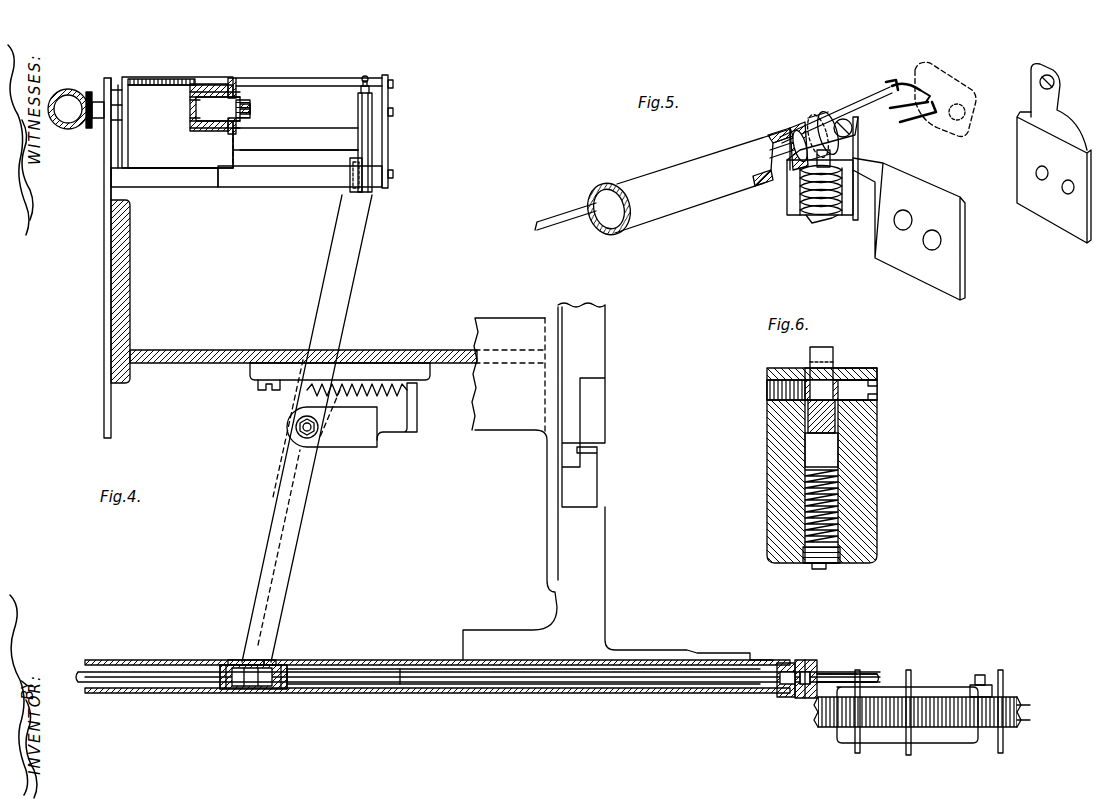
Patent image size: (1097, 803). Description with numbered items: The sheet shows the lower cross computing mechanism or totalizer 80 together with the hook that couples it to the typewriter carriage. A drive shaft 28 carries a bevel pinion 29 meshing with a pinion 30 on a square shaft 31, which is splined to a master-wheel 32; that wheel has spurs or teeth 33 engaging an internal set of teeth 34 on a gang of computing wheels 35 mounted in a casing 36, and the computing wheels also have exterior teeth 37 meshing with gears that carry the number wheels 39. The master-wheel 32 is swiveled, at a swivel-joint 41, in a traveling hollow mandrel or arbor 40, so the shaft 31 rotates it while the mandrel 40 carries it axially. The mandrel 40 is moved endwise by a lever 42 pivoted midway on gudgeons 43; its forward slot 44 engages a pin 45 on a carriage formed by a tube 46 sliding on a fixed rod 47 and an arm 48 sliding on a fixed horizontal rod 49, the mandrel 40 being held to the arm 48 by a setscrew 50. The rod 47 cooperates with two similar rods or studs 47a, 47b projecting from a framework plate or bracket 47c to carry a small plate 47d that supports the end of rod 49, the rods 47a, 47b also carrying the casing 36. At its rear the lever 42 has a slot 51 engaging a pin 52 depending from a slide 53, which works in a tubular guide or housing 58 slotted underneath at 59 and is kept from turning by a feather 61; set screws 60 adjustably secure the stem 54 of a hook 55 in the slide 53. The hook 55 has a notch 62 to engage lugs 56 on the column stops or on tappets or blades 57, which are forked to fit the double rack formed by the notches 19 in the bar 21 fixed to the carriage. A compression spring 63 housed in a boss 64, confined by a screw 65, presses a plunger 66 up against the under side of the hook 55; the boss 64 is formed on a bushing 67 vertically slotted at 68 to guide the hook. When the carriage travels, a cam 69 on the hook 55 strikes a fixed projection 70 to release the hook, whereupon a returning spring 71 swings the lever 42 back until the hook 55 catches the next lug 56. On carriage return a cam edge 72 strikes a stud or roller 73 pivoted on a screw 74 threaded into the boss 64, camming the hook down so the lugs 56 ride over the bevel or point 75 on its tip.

In FIG. 4, the notch 19 is at (990, 727).
In FIG. 4, the bar 21 is at (1018, 712).
In FIG. 4, the drive shaft 28 is at (68, 114).
In FIG. 4, the bevel pinion 29 is at (70, 89).
In FIG. 4, the pinion 30 is at (92, 128).
In FIG. 4, the square shaft 31 is at (97, 102).
In FIG. 4, the master-wheel 32 is at (190, 120).
In FIG. 4, the spurs or teeth 33 is at (224, 132).
In FIG. 4, the internal set of teeth 34 is at (190, 99).
In FIG. 4, the computing wheels 35 is at (215, 84).
In FIG. 4, the casing 36 is at (168, 187).
In FIG. 4, the exterior teeth 37 is at (232, 80).
In FIG. 4, the number wheels 39 is at (160, 80).
In FIG. 4, the traveling hollow mandrel or arbor 40 is at (293, 86).
In FIG. 4, the swivel-joint 41 is at (245, 100).
In FIG. 4, the lever 42 is at (307, 428).
In FIG. 4, the gudgeons 43 is at (305, 448).
In FIG. 4, the slot 44 is at (355, 192).
In FIG. 4, the pin 45 is at (352, 180).
In FIG. 4, the tube 46 is at (300, 177).
In FIG. 4, the fixed rod 47 is at (188, 183).
In FIG. 4, the rod or stud 47a is at (372, 128).
In FIG. 4, the rod or stud 47b is at (324, 86).
In FIG. 4, the framework plate or bracket 47c is at (104, 230).
In FIG. 4, the small plate 47d is at (388, 100).
In FIG. 4, the arm 48 is at (372, 150).
In FIG. 4, the fixed horizontal rod 49 is at (322, 150).
In FIG. 4, the setscrew 50 is at (365, 78).
In FIG. 4, the slot 51 is at (244, 662).
In FIG. 4, the pin 52 is at (268, 663).
In FIG. 4, the slide 53 is at (305, 690).
In FIG. 4, the stem 54 is at (672, 682).
In FIG. 5, the stem 54 is at (560, 230).
In FIG. 6, the stem 54 is at (805, 422).
In FIG. 4, the hook 55 is at (866, 674).
In FIG. 5, the hook 55 is at (899, 80).
In FIG. 6, the hook 55 is at (833, 352).
In FIG. 5, the lugs 56 is at (884, 84).
In FIG. 4, the tappets or blades 57 is at (1003, 673).
In FIG. 5, the tappets or blades 57 is at (950, 72).
In FIG. 4, the tubular guide or housing 58 is at (566, 694).
In FIG. 5, the tubular guide or housing 58 is at (684, 185).
In FIG. 4, the slot 59 is at (370, 690).
In FIG. 4, the set screws 60 is at (222, 690).
In FIG. 4, the feather 61 is at (240, 690).
In FIG. 4, the notch 62 is at (850, 676).
In FIG. 5, the notch 62 is at (900, 107).
In FIG. 5, the compression spring 63 is at (808, 215).
In FIG. 6, the compression spring 63 is at (805, 485).
In FIG. 5, the boss 64 is at (787, 198).
In FIG. 6, the boss 64 is at (767, 528).
In FIG. 5, the screw 65 is at (830, 218).
In FIG. 6, the screw 65 is at (812, 569).
In FIG. 5, the plunger 66 is at (830, 155).
In FIG. 6, the plunger 66 is at (821, 450).
In FIG. 4, the bushing 67 is at (780, 694).
In FIG. 5, the bushing 67 is at (775, 132).
In FIG. 4, the vertical slot 68 is at (795, 668).
In FIG. 5, the vertical slot 68 is at (797, 128).
In FIG. 5, the cam 69 is at (922, 118).
In FIG. 4, the projection 70 is at (980, 675).
In FIG. 5, the projection 70 is at (1035, 70).
In FIG. 4, the returning spring 71 is at (400, 392).
In FIG. 5, the cam edge 72 is at (825, 115).
In FIG. 6, the cam edge 72 is at (808, 372).
In FIG. 4, the stud or roller 73 is at (819, 672).
In FIG. 6, the stud or roller 73 is at (852, 368).
In FIG. 4, the screw 74 is at (806, 694).
In FIG. 5, the screw 74 is at (852, 132).
In FIG. 6, the screw 74 is at (862, 394).
In FIG. 4, the bevel or point 75 is at (878, 678).
In FIG. 5, the bevel or point 75 is at (928, 88).
In FIG. 4, the cross computing mechanism or totalizer 80 is at (177, 122).